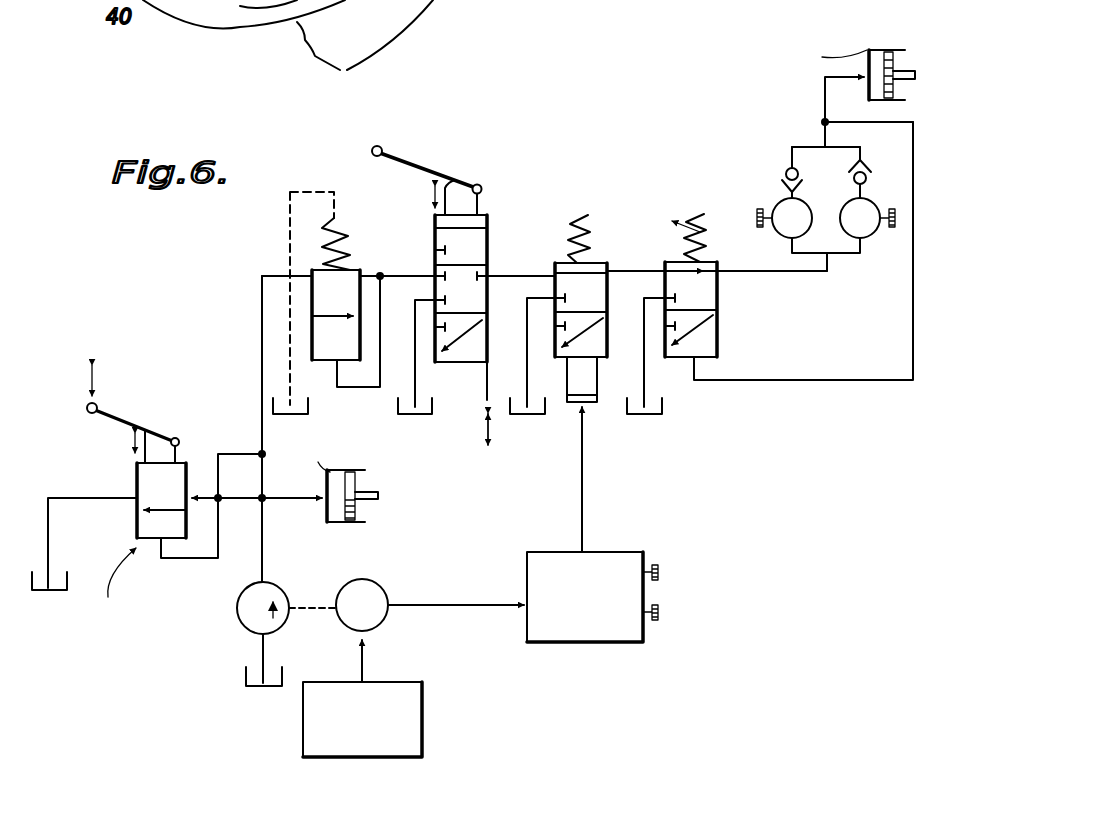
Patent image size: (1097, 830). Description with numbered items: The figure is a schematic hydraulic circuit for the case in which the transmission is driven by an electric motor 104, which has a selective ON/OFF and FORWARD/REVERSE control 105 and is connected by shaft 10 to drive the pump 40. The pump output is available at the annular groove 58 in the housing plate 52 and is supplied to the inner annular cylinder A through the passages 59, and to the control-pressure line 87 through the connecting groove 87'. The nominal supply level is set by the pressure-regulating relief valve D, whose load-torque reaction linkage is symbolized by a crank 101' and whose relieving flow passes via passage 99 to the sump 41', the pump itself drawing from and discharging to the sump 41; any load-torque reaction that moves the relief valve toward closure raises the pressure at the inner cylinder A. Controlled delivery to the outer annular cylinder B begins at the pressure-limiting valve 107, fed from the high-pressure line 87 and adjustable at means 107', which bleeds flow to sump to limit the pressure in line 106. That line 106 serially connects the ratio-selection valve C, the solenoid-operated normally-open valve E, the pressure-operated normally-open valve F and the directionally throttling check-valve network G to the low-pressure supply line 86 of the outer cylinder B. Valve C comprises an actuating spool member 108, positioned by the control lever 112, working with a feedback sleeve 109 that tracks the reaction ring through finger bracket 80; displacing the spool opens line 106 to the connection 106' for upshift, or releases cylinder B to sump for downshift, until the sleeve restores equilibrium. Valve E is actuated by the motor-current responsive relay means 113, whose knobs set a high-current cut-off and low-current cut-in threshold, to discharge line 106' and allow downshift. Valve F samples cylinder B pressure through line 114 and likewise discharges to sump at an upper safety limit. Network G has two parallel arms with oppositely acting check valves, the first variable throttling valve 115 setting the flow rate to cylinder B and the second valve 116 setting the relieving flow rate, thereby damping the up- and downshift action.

The shaft 10 is at (312, 606).
The pump 40 is at (280, 587).
The sump 41 is at (259, 680).
The sump (relieving flow) 41' is at (68, 564).
The housing plate 52 is at (288, 35).
The annular groove 58 is at (262, 558).
The registering passages 59 is at (280, 500).
The finger bracket 80 is at (493, 423).
The low-pressure supply line 86 is at (824, 94).
The control-pressure line 87 is at (325, 427).
The connecting groove 87' is at (211, 506).
The passage 99 is at (72, 500).
The crank 101' is at (133, 405).
The electric motor 104 is at (388, 593).
The ON/OFF and FORWARD/REVERSE control 105 is at (400, 680).
The low-pressure supply line 106 is at (471, 254).
The output connection 106' is at (667, 251).
The pressure-limiting valve 107 is at (355, 295).
The adjusting means 107' is at (283, 303).
The actuating spool member 108 is at (480, 185).
The feedback sleeve 109 is at (486, 386).
The control lever 112 is at (436, 176).
The relay means 113 is at (604, 550).
The line 114 is at (770, 382).
The first variable throttling valve 115 is at (773, 203).
The second variable throttling valve 116 is at (848, 204).
The inner annular cylinder A is at (352, 528).
The outer annular cylinder B is at (887, 46).
The ratio-selection valve C is at (504, 224).
The pressure-regulating relief valve D is at (165, 427).
The solenoid-operated normally-open valve E is at (602, 254).
The pressure-operated normally-open valve F is at (714, 254).
The directionally throttling check-valve network G is at (807, 196).